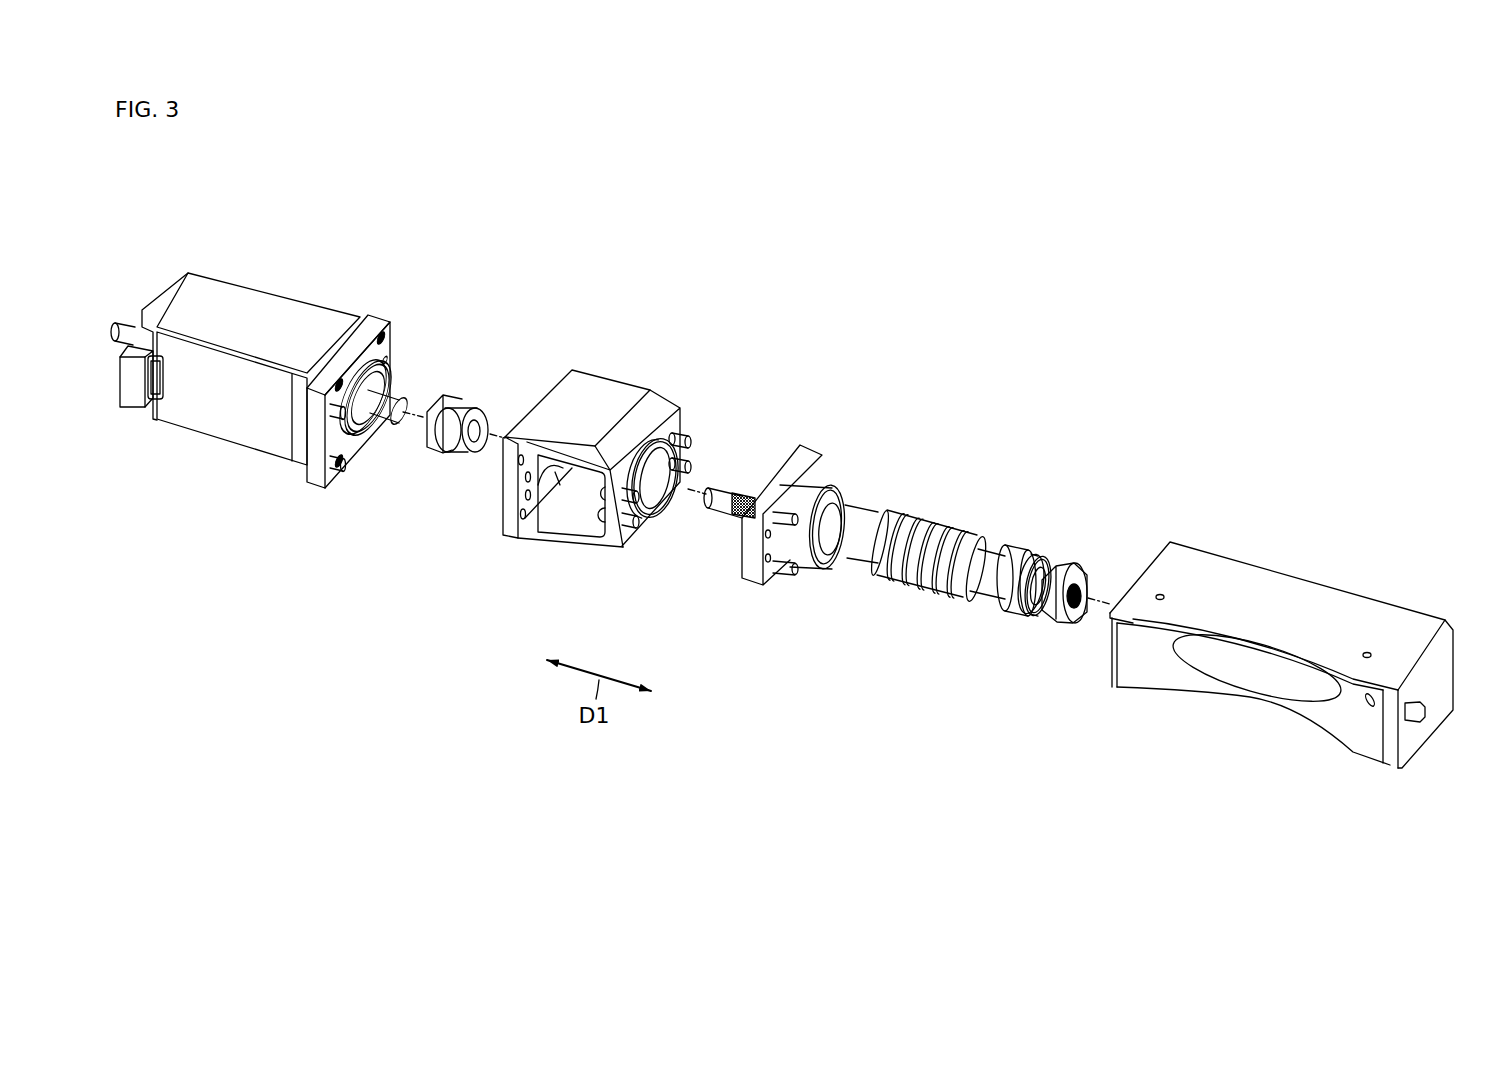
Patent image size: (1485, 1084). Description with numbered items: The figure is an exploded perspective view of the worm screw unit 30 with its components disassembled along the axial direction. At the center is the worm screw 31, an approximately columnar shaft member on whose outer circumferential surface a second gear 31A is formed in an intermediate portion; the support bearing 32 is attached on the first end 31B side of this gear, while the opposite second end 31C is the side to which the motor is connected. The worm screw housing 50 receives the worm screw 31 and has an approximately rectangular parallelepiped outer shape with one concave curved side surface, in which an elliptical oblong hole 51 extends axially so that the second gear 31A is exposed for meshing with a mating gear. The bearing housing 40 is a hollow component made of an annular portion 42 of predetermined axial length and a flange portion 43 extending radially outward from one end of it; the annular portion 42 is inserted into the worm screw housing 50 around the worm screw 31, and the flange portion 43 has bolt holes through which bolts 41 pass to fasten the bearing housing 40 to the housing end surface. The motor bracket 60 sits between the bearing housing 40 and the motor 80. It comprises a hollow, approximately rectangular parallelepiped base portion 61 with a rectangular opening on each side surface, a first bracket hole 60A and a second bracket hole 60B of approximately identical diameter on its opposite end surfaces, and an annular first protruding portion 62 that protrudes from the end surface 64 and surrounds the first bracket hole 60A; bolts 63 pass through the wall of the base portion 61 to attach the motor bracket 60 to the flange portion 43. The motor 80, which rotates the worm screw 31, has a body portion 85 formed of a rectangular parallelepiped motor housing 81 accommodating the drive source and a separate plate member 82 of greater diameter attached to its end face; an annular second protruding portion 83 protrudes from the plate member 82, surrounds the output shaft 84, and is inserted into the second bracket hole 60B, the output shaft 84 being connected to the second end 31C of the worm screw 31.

The worm screw unit 30 is at (1016, 330).
The worm screw 31 is at (950, 509).
The second gear 31A is at (917, 592).
The first end 31B is at (1038, 567).
The second end 31C is at (725, 495).
The support bearing 32 is at (1008, 607).
The bearing housing 40 is at (812, 395).
The bolts 41 is at (742, 580).
The annular portion 42 is at (812, 493).
The flange portion 43 is at (805, 457).
The worm screw housing 50 is at (1297, 592).
The oblong hole 51 is at (1268, 666).
The motor bracket 60 is at (690, 333).
The first bracket hole 60A is at (658, 494).
The second bracket hole 60B is at (546, 484).
The base portion 61 is at (612, 394).
The first protruding portion 62 is at (667, 432).
The bolts 63 is at (686, 437).
The end surface 64 is at (628, 472).
The motor 80 is at (262, 257).
The motor housing 81 is at (308, 323).
The plate member 82 is at (358, 338).
The second protruding portion 83 is at (392, 378).
The output shaft 84 is at (378, 400).
The body portion 85 is at (387, 268).